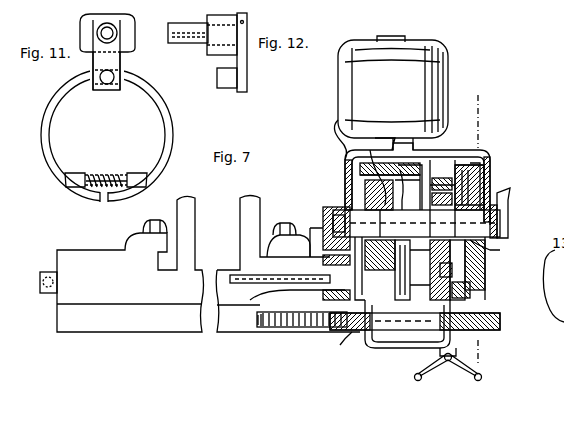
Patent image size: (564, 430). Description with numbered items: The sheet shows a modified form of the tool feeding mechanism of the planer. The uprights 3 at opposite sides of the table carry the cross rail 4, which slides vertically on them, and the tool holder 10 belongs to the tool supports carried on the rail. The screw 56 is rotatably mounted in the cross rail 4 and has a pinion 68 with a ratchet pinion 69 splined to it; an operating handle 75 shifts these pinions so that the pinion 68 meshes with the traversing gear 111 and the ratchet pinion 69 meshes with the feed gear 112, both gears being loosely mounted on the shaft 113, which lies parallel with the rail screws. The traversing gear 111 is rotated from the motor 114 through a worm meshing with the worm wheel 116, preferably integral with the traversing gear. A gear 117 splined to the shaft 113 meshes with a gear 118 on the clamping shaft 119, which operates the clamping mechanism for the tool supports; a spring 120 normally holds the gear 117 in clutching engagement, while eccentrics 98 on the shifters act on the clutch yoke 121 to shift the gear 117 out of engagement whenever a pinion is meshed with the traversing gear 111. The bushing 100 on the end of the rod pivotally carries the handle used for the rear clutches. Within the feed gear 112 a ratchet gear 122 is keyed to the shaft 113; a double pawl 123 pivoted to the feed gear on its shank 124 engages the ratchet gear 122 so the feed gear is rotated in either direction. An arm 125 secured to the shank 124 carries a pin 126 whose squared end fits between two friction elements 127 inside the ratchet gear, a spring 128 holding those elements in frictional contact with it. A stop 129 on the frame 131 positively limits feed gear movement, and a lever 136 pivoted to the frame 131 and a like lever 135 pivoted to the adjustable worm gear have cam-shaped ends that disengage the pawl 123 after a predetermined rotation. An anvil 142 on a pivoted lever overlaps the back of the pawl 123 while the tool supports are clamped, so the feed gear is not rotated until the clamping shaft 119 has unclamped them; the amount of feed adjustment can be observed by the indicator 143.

In FIG. 7, the uprights 3 is at (245, 206).
In FIG. 7, the cross rail 4 is at (137, 312).
In FIG. 7, the tool holder 10 is at (484, 111).
In FIG. 7, the screw 56 is at (268, 324).
In FIG. 7, the pinion 68 is at (400, 344).
In FIG. 7, the ratchet pinion 69 is at (498, 341).
In FIG. 7, the operating handle 75 is at (448, 362).
In FIG. 7, the eccentrics 98 is at (352, 340).
In FIG. 7, the bushing 100 is at (45, 272).
In FIG. 7, the traversing gear 111 is at (405, 163).
In FIG. 7, the feed gear 112 is at (463, 150).
In FIG. 7, the shaft 113 is at (335, 220).
In FIG. 7, the motor 114 is at (440, 63).
In FIG. 7, the worm wheel 116 is at (375, 160).
In FIG. 7, the gear 117 is at (350, 158).
In FIG. 7, the gear 118 is at (340, 328).
In FIG. 7, the clamping shaft 119 is at (233, 276).
In FIG. 7, the spring 120 is at (356, 195).
In FIG. 7, the clutch yoke 121 is at (440, 356).
In FIG. 7, the ratchet gear 122 is at (478, 262).
In FIG. 11, the double pawl 123 is at (128, 30).
In FIG. 12, the double pawl 123 is at (215, 55).
In FIG. 12, the shank 124 is at (184, 36).
In FIG. 12, the arm 125 is at (247, 58).
In FIG. 7, the arm 125 is at (472, 192).
In FIG. 11, the pin 126 is at (82, 70).
In FIG. 12, the pin 126 is at (228, 80).
In FIG. 11, the friction elements 127 is at (165, 127).
In FIG. 11, the spring 128 is at (107, 175).
In FIG. 7, the stop 129 is at (420, 268).
In FIG. 7, the frame 131 is at (486, 172).
In FIG. 7, the lever 135 is at (488, 162).
In FIG. 7, the lever 136 is at (454, 278).
In FIG. 7, the anvil 142 is at (486, 296).
In FIG. 7, the indicator 143 is at (505, 208).